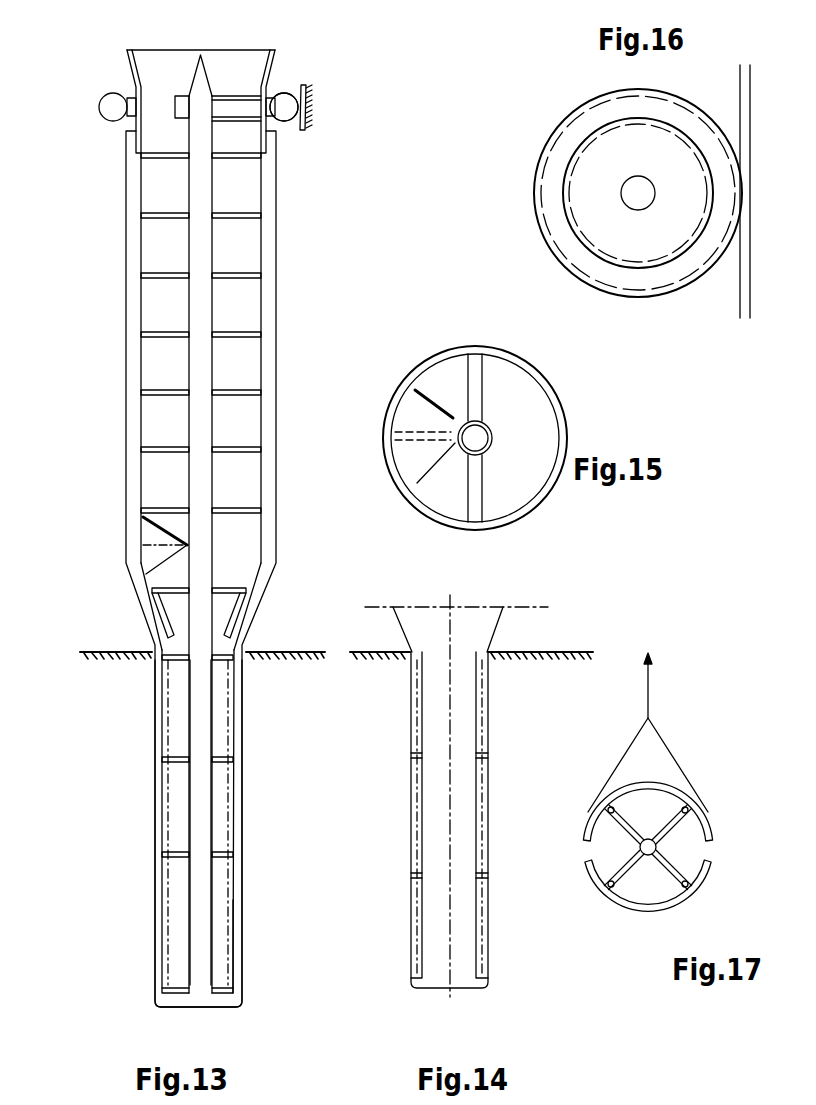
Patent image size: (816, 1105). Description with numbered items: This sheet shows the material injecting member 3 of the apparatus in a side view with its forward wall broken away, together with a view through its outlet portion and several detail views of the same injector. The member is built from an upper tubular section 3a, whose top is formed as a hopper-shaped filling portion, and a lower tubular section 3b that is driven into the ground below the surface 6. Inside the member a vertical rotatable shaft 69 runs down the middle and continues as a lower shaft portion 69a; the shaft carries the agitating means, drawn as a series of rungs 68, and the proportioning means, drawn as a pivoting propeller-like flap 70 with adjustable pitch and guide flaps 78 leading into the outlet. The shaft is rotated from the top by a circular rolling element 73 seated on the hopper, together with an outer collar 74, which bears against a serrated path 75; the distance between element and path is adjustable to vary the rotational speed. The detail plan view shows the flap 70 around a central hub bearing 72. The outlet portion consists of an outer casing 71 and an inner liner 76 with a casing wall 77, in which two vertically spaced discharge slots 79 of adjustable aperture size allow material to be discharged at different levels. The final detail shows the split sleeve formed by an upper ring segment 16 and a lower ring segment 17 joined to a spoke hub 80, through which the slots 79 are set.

In FIG. 13, the material injecting member 3 is at (66, 348).
In FIG. 13, the upper tubular section 3a is at (127, 76).
In FIG. 13, the lower tubular section 3b is at (238, 712).
In FIG. 14, the ground surface 6 is at (573, 652).
In FIG. 17, the upper ring segment 16 is at (688, 824).
In FIG. 17, the lower ring segment 17 is at (608, 895).
In FIG. 13, the rungs 68 is at (255, 213).
In FIG. 13, the central rod 69 is at (213, 420).
In FIG. 13, the lower rod portion 69a is at (210, 803).
In FIG. 13, the hinged flap 70 is at (148, 556).
In FIG. 15, the hinged flap 70 is at (412, 414).
In FIG. 13, the outer casing 71 is at (240, 898).
In FIG. 14, the outer casing 71 is at (411, 735).
In FIG. 15, the hub bearing 72 is at (479, 432).
In FIG. 13, the ball pivot 73 is at (287, 93).
In FIG. 16, the ball pivot 73 is at (570, 246).
In FIG. 16, the outer collar 74 is at (640, 303).
In FIG. 13, the serrated plate 75 is at (306, 88).
In FIG. 16, the serrated plate 75 is at (750, 275).
In FIG. 13, the liner 76 is at (168, 852).
In FIG. 13, the casing wall 77 is at (233, 945).
In FIG. 13, the guide flaps 78 is at (240, 616).
In FIG. 14, the split segments 79 is at (478, 755).
In FIG. 17, the split segments 79 is at (586, 849).
In FIG. 17, the spoke hub 80 is at (708, 858).